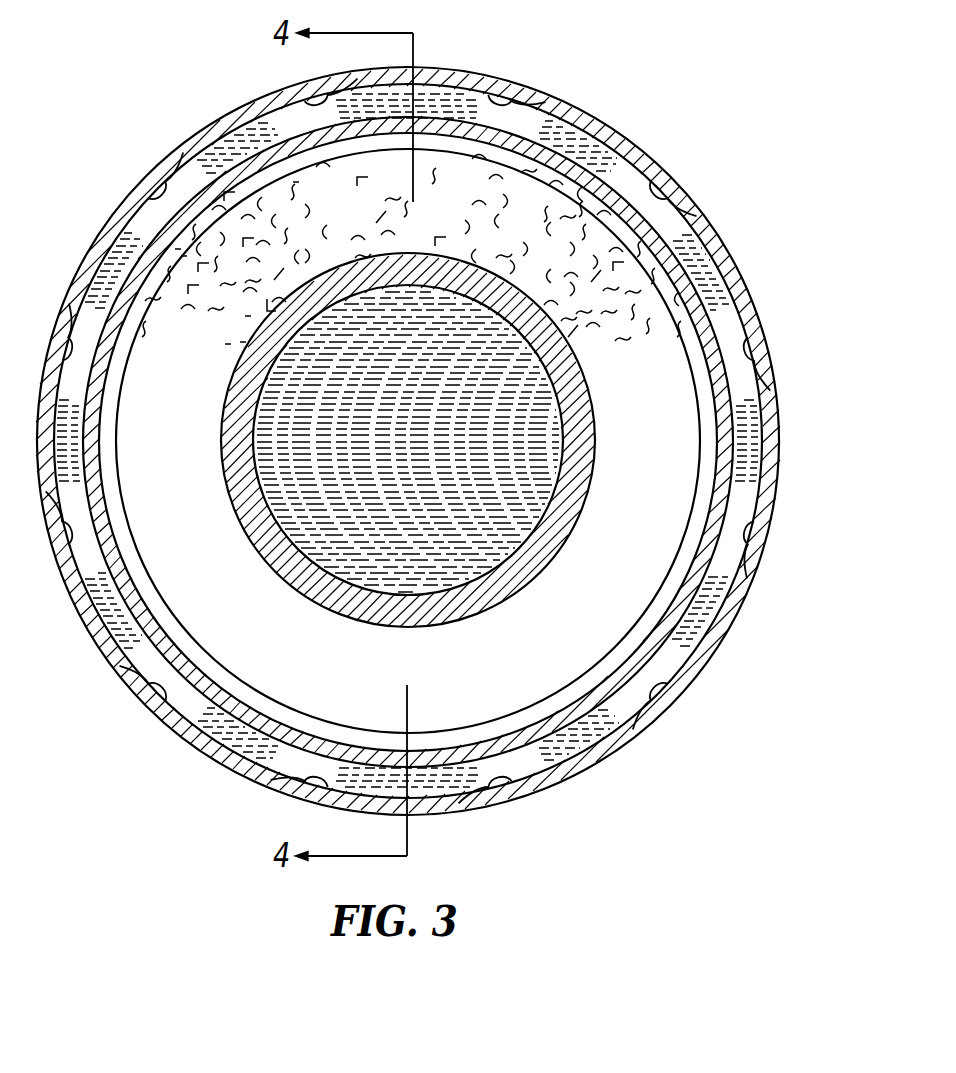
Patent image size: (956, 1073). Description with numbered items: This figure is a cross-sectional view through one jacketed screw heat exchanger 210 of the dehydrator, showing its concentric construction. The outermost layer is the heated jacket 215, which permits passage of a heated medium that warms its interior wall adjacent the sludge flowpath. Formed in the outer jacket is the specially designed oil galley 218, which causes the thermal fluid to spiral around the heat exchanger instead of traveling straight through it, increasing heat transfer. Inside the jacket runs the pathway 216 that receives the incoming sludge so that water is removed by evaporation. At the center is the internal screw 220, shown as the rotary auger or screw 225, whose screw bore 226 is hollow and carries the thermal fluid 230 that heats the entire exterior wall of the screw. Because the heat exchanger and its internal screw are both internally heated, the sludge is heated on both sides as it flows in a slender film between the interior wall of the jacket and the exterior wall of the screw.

The jacketed screw heat exchanger 210 is at (650, 118).
The jacket 215 is at (702, 315).
The pathway 216 is at (705, 388).
The oil galley 218 is at (158, 205).
The internal screw 220 is at (523, 285).
The rotary auger or screw 225 is at (448, 102).
The screw bore 226 is at (570, 515).
The thermal fluid 230 is at (507, 342).